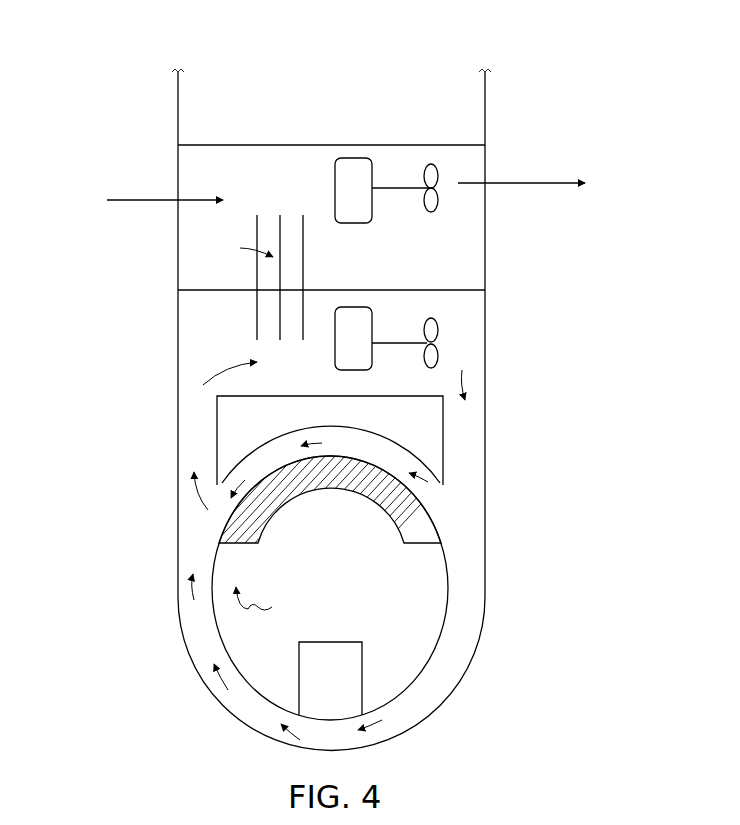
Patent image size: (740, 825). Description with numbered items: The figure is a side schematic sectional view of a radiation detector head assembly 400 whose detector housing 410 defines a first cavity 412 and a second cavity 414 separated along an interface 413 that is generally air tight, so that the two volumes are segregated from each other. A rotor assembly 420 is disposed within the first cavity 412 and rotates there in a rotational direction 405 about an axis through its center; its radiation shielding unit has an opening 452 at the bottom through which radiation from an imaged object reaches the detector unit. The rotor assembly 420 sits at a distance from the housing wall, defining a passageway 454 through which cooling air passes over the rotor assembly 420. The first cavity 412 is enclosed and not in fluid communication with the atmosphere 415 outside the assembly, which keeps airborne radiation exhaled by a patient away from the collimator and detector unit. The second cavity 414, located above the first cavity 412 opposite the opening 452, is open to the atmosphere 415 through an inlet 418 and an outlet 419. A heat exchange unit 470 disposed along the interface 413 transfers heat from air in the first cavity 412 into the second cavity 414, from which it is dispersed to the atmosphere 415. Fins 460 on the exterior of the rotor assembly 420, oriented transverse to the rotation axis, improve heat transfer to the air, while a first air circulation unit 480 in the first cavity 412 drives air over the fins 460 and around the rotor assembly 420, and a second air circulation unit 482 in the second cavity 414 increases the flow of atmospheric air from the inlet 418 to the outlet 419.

The radiation detector head assembly 400 is at (173, 48).
The rotational direction 405 is at (273, 601).
The detector housing 410 is at (178, 93).
The first cavity 412 is at (463, 324).
The interface 413 is at (440, 290).
The second cavity 414 is at (463, 252).
The atmosphere 415 is at (76, 140).
The inlet 418 is at (176, 250).
The outlet 419 is at (496, 219).
The rotor assembly 420 is at (420, 600).
The opening 452 is at (338, 703).
The passageway 454 is at (450, 643).
The fins 460 is at (330, 487).
The heat exchange unit 470 is at (283, 215).
The first air circulation unit 480 is at (438, 357).
The second air circulation unit 482 is at (433, 164).